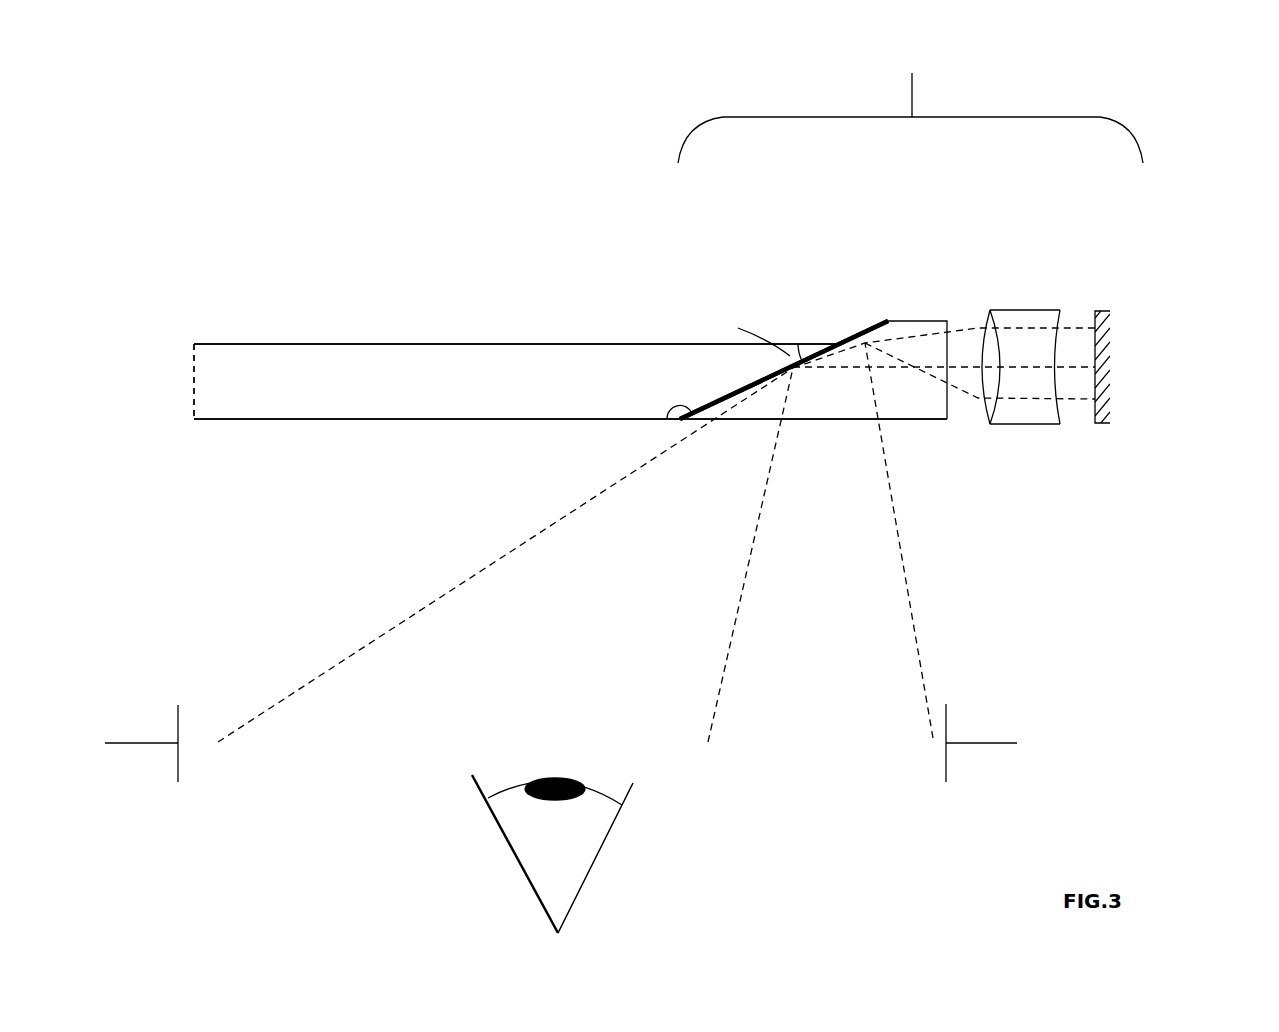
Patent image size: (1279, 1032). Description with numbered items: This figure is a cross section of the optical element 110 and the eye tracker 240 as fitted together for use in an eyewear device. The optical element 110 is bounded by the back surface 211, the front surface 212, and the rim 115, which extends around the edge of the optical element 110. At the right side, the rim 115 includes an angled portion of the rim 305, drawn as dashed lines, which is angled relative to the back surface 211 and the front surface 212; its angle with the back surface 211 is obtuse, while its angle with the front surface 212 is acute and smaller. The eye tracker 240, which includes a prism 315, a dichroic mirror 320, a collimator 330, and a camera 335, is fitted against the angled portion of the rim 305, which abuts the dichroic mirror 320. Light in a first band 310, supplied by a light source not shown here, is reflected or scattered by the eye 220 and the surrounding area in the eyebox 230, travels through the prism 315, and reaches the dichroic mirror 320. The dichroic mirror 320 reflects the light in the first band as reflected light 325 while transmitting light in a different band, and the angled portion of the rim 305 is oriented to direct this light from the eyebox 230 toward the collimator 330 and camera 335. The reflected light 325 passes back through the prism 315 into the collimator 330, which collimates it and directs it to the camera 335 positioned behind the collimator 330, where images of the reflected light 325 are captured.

The optical element 110 is at (338, 350).
The rim 115 is at (194, 379).
The back surface 211 is at (357, 419).
The front surface 212 is at (275, 344).
The eye 220 is at (503, 854).
The eyebox 230 is at (945, 793).
The eye tracker 240 is at (894, 66).
The angled portion of the rim 305 is at (760, 377).
The light in first band 310 is at (367, 647).
The prism 315 is at (903, 403).
The dichroic mirror 320 is at (853, 338).
The reflected light 325 is at (930, 342).
The collimator 330 is at (1040, 313).
The camera 335 is at (1125, 348).